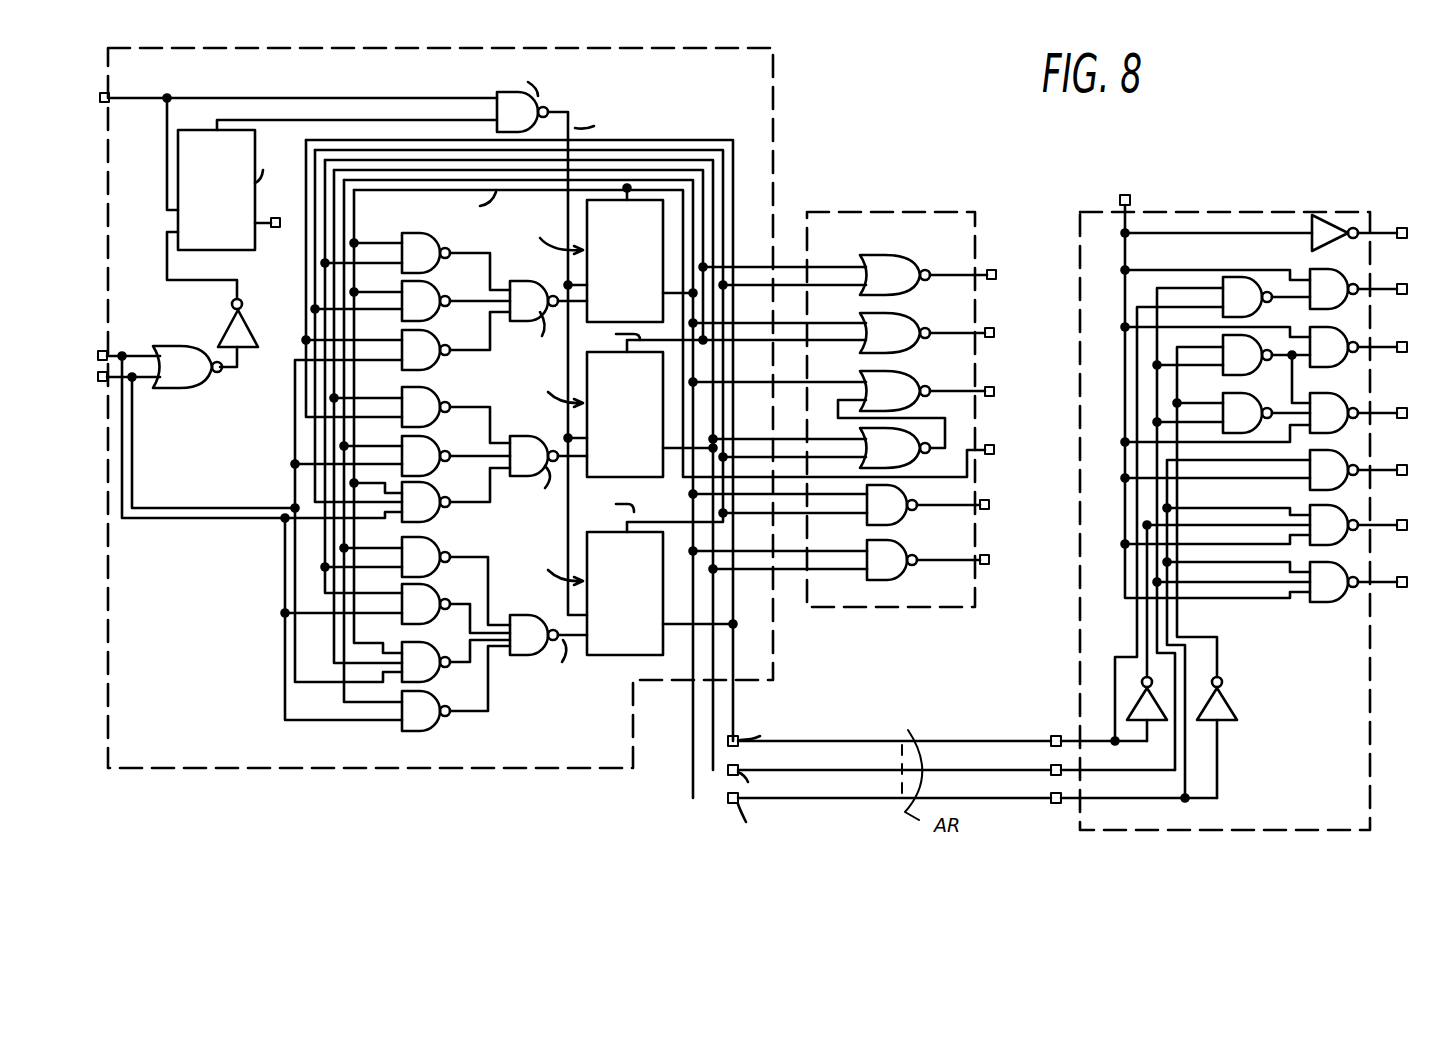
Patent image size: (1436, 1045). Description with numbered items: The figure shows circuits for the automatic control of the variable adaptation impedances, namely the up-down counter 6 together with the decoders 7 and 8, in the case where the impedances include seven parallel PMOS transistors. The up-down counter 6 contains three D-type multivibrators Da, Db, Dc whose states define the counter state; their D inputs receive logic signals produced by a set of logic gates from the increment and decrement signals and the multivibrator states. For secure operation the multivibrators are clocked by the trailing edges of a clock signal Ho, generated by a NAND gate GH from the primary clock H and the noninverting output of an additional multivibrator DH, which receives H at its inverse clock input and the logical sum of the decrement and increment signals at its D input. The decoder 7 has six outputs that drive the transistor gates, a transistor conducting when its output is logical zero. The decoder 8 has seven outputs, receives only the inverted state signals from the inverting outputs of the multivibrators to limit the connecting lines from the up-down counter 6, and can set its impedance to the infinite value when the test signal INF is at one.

The up-down counter 6 is at (774, 112).
The decoder 7 is at (877, 212).
The decoder 8 is at (1278, 212).